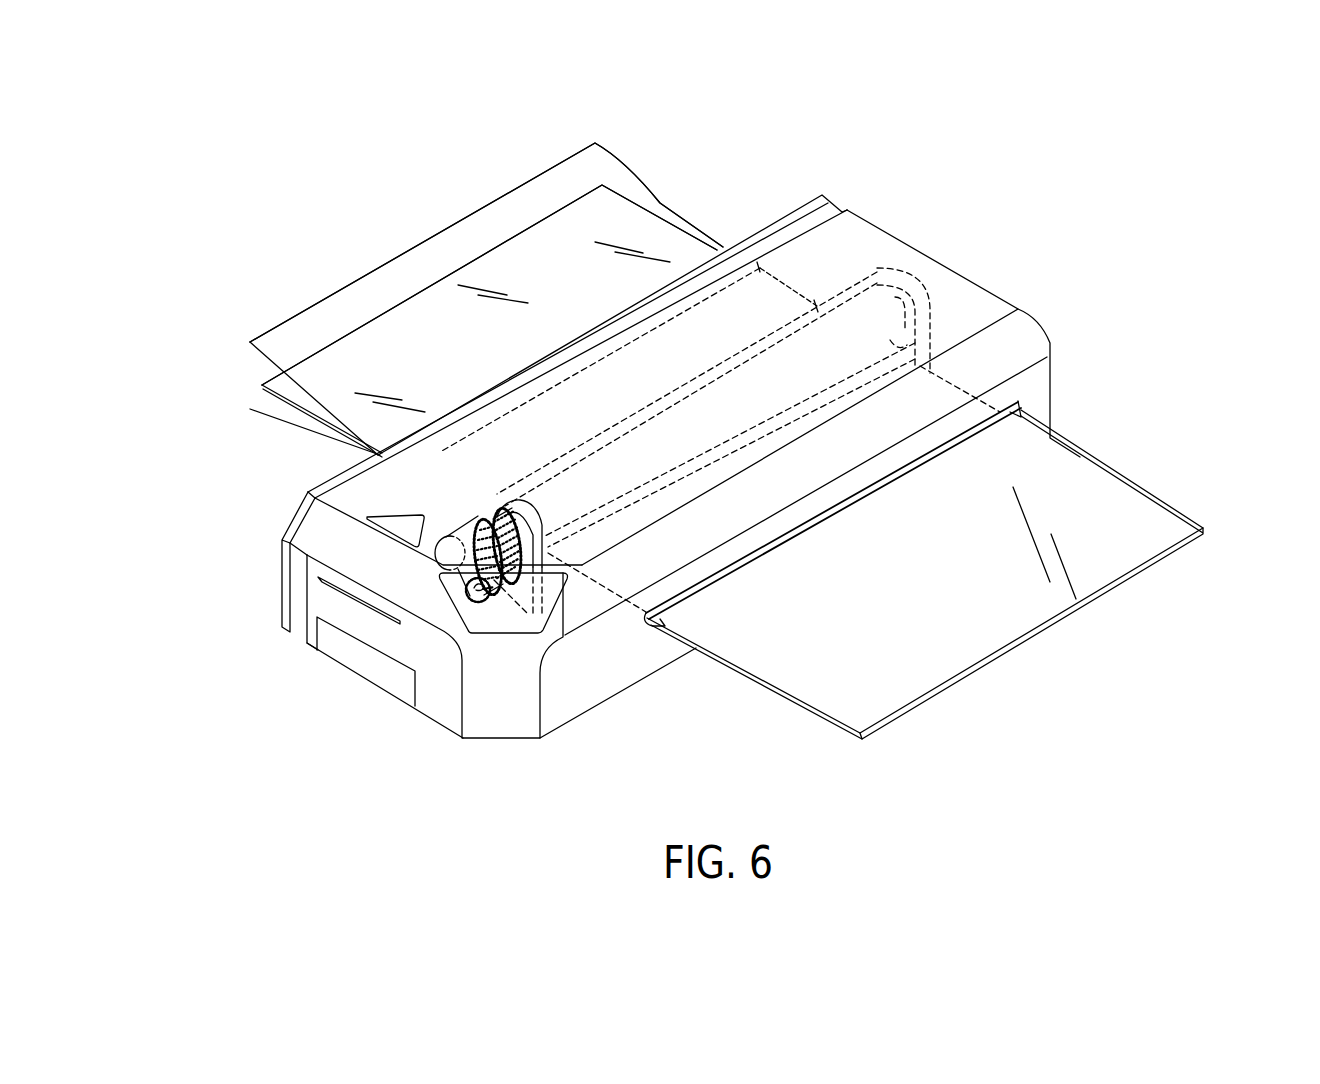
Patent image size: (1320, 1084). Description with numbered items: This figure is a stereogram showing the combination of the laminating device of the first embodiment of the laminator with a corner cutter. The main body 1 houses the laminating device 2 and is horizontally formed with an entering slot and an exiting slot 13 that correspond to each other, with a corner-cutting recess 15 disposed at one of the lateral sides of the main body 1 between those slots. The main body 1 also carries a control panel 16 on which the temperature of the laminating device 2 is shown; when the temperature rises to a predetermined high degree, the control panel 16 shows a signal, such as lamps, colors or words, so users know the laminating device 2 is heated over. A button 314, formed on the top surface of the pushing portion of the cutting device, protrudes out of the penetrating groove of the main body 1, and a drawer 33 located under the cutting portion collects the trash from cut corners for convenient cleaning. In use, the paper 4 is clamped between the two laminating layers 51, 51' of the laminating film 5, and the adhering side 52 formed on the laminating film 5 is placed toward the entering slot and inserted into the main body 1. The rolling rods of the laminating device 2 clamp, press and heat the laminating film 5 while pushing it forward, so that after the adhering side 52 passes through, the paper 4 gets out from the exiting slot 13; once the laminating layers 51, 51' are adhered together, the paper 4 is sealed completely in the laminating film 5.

The main body 1 is at (977, 280).
The laminating device 2 is at (900, 276).
The paper 4 is at (315, 409).
The laminating film 5 is at (176, 293).
The laminating layer 51 is at (453, 299).
The laminating layer 51' is at (445, 321).
The exiting slot 13 is at (1024, 414).
The corner-cutting recess 15 is at (332, 588).
The control panel 16 is at (477, 622).
The drawer 33 is at (348, 651).
The adhering side 52 is at (1163, 554).
The button 314 is at (388, 522).